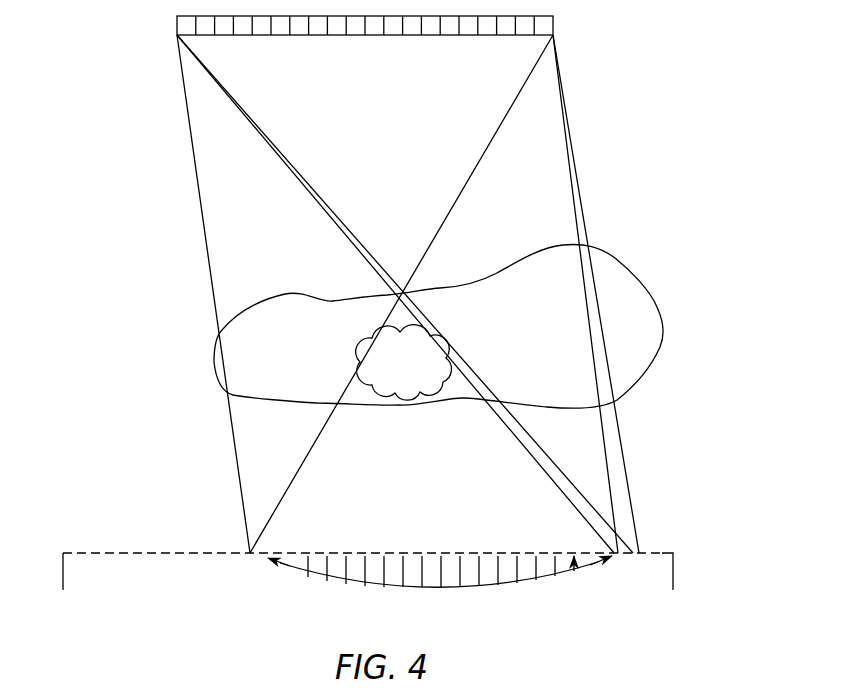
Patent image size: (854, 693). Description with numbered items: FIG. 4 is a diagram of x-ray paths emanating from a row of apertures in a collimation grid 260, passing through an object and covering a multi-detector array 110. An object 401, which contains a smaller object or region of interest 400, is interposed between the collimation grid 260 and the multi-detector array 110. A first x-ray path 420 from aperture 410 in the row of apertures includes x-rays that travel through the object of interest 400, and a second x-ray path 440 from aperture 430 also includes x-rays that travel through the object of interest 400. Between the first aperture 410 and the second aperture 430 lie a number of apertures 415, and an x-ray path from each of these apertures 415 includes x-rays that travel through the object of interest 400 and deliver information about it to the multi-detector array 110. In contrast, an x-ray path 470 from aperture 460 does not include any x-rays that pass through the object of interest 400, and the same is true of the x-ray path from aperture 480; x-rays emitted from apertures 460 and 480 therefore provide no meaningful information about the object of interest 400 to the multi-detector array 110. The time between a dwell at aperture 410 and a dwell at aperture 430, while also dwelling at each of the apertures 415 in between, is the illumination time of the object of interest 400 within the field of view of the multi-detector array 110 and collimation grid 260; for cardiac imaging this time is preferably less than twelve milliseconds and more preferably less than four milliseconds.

The multi-detector array 110 is at (390, 20).
The collimation grid 260 is at (368, 555).
The object of interest 400 is at (424, 377).
The object 401 is at (656, 368).
The aperture 410 is at (249, 557).
The apertures 415 is at (440, 590).
The first x-ray path 420 is at (216, 256).
The aperture 430 is at (617, 558).
The second x-ray path 440 is at (585, 346).
The aperture 460 is at (645, 560).
The x-ray path 470 is at (340, 207).
The aperture 480 is at (658, 549).